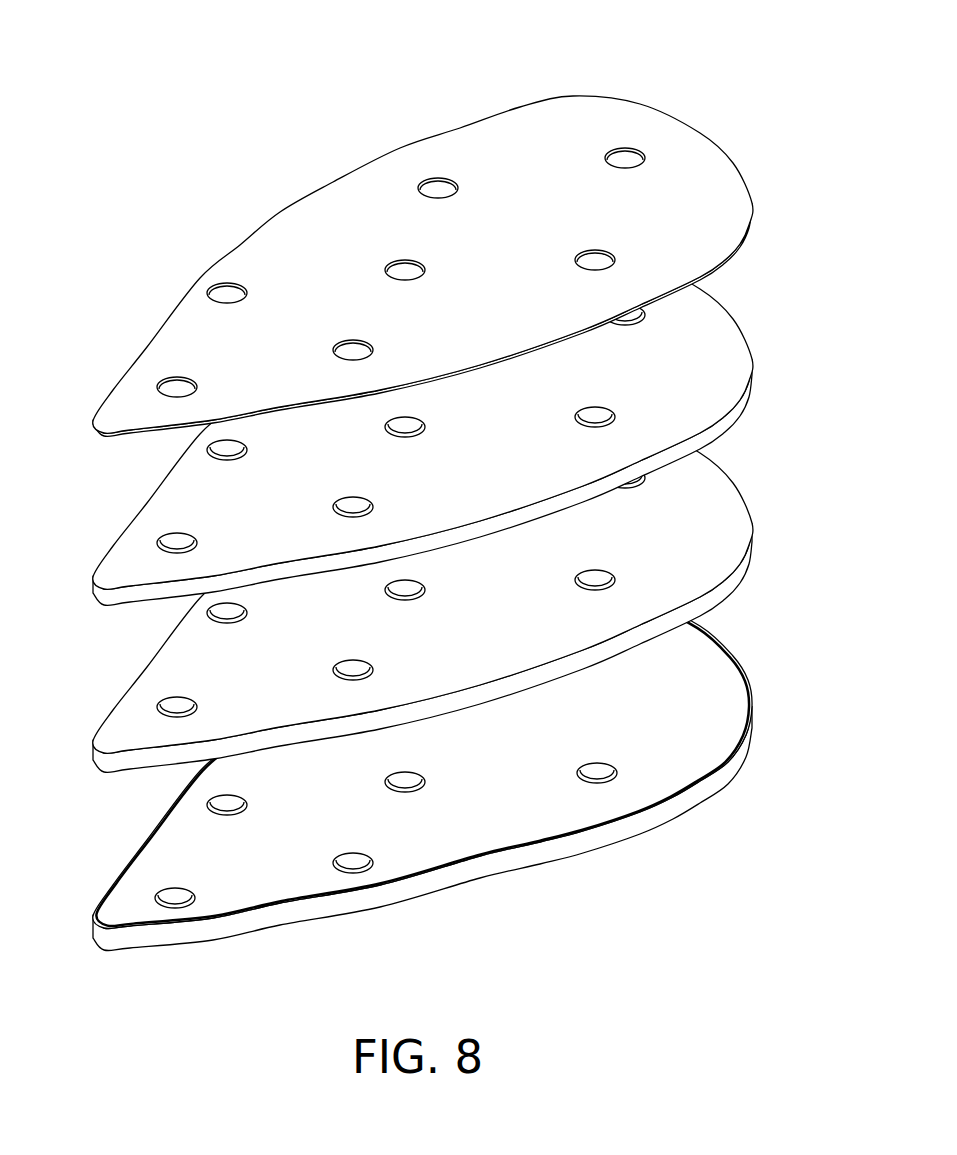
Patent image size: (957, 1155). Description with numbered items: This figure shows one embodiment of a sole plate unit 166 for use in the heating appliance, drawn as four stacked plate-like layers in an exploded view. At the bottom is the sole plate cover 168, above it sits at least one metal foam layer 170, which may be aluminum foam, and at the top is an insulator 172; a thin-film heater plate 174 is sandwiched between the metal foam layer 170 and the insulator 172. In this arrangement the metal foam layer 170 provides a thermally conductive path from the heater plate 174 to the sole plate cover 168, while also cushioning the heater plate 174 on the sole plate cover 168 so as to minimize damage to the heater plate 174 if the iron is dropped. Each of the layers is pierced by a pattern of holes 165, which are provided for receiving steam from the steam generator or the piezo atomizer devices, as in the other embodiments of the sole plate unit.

The sole plate unit 166 is at (240, 83).
The sole plate cover 168 is at (727, 648).
The metal foam layer 170 is at (720, 468).
The thin-film heater plate 174 is at (713, 298).
The insulator 172 is at (703, 135).
The holes 165 is at (160, 380).